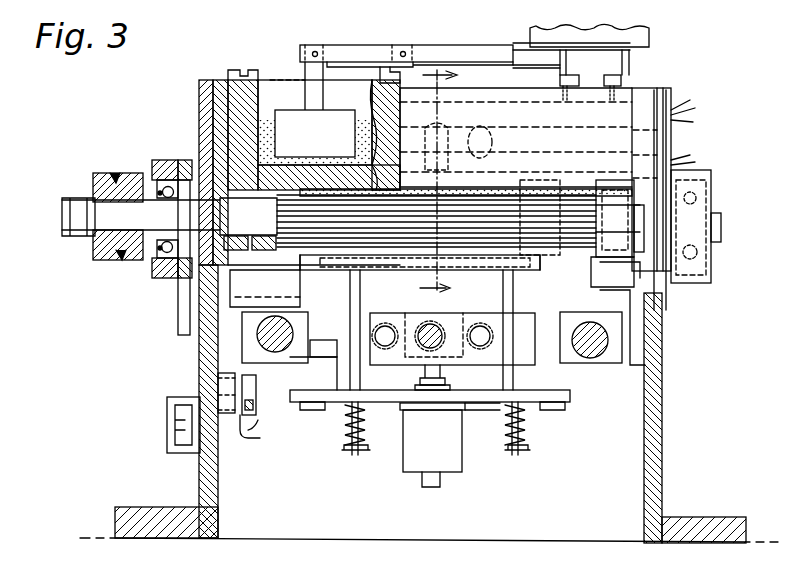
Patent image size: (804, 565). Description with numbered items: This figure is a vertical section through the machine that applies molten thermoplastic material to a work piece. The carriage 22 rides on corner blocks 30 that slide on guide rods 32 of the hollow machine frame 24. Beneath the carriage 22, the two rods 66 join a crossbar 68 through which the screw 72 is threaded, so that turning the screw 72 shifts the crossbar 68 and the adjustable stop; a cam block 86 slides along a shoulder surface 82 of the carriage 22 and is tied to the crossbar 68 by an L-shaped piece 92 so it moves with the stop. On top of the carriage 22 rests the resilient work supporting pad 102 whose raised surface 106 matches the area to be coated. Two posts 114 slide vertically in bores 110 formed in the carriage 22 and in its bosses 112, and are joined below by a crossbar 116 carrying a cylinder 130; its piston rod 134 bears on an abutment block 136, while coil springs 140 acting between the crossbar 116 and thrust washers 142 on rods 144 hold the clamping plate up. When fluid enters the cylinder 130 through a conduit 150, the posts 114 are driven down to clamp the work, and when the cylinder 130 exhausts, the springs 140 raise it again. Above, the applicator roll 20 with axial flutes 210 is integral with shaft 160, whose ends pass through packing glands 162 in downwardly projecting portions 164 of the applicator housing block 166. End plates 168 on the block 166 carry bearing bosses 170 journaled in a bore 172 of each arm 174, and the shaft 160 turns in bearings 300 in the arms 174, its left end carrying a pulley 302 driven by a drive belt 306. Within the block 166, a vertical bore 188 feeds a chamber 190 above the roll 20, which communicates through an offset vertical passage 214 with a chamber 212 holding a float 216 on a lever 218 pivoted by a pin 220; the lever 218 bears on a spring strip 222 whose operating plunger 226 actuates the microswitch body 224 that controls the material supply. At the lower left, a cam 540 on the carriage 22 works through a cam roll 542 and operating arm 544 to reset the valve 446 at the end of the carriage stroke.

The applicator roll 20 is at (553, 190).
The carriage 22 is at (230, 292).
The machine frame 24 is at (218, 512).
The corner blocks 30 is at (256, 345).
The guide rods 32 is at (242, 340).
The rods 66 is at (386, 326).
The crossbar 68 is at (486, 366).
The screw 72 is at (435, 325).
The shoulder surface 82 is at (648, 308).
The cam block 86 is at (640, 290).
The L-shaped piece 92 is at (648, 345).
The work supporting pad 102 is at (500, 272).
The raised surface 106 is at (392, 260).
The bores 110 is at (325, 392).
The bosses 112 is at (310, 375).
The posts 114 is at (300, 395).
The crossbar 116 is at (512, 410).
The cylinder 130 is at (462, 468).
The piston rod 134 is at (445, 380).
The abutment block 136 is at (418, 367).
The coil springs 140 is at (348, 438).
The thrust washers 142 is at (352, 455).
The rods 144 is at (366, 428).
The conduit 150 is at (440, 485).
The shaft 160 is at (96, 256).
The packing glands 162 is at (248, 252).
The downwardly projecting portions 164 is at (274, 252).
The applicator housing block 166 is at (632, 90).
The end plates 168 is at (199, 94).
The bearing bosses 170 is at (192, 165).
The bore 172 is at (180, 290).
The arms 174 is at (168, 160).
The vertical bore 188 is at (470, 168).
The chamber 190 is at (575, 185).
The flutes 210 is at (525, 190).
The chamber 212 is at (270, 90).
The vertical passage 214 is at (355, 165).
The float 216 is at (327, 112).
The lever 218 is at (485, 46).
The pin 220 is at (405, 52).
The spring strip 222 is at (612, 62).
The microswitch body 224 is at (650, 36).
The operating plunger 226 is at (566, 52).
The bearings 300 is at (152, 262).
The pulley 302 is at (100, 170).
The drive belt 306 is at (114, 174).
The valve 446 is at (167, 445).
The cam 540 is at (220, 380).
The cam roll 542 is at (256, 412).
The operating arm 544 is at (248, 435).